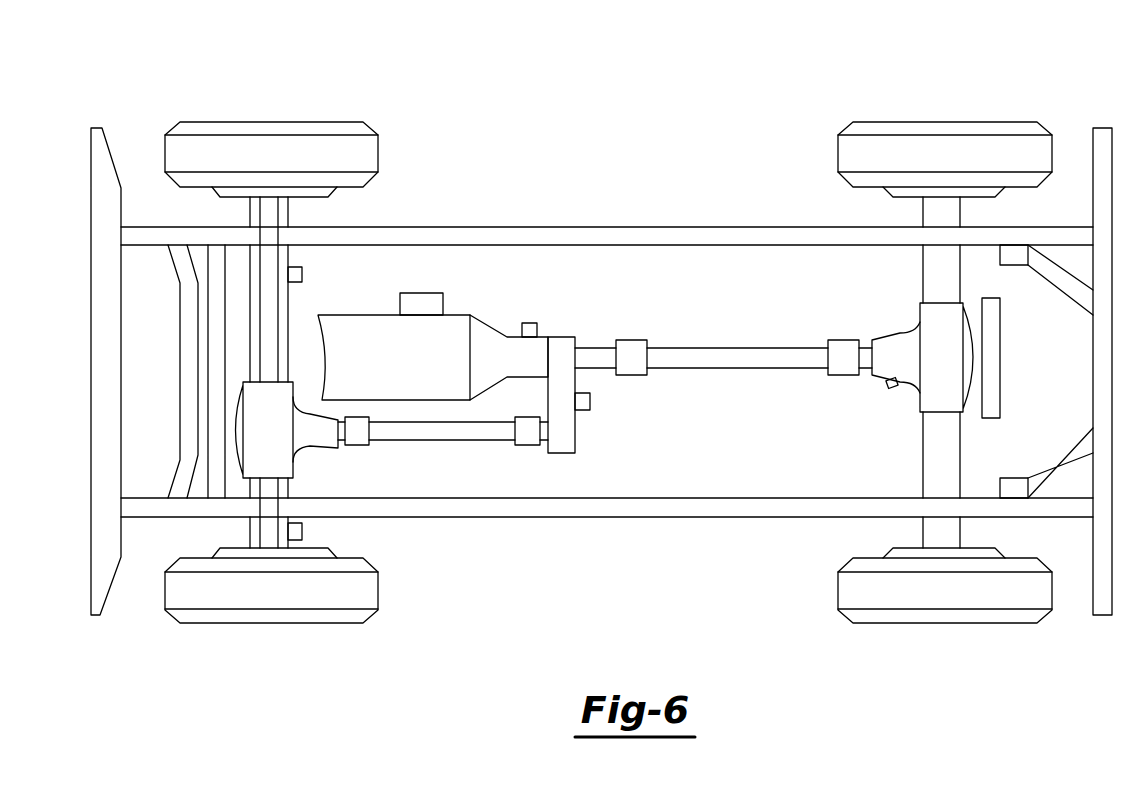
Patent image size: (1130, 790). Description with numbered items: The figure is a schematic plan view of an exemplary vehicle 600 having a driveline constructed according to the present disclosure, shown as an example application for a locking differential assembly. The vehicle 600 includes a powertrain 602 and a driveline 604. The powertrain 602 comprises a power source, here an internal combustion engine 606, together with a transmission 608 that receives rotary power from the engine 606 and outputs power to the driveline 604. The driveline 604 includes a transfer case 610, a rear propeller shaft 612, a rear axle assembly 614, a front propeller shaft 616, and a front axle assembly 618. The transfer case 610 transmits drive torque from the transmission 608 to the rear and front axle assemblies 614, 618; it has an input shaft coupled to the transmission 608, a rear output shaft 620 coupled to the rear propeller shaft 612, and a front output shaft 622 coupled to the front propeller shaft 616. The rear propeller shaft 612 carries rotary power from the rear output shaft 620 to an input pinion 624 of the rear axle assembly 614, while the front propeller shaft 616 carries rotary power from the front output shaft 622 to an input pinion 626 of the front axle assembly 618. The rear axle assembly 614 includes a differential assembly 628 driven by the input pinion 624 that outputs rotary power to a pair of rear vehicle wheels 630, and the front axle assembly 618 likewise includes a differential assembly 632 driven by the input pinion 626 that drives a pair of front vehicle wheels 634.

The vehicle 600 is at (714, 71).
The powertrain 602 is at (433, 298).
The driveline 604 is at (737, 342).
The internal combustion engine 606 is at (358, 315).
The transmission 608 is at (492, 325).
The transfer case 610 is at (563, 340).
The rear propeller shaft 612 is at (752, 368).
The rear axle assembly 614 is at (929, 372).
The front propeller shaft 616 is at (447, 440).
The front axle assembly 618 is at (266, 372).
The rear output shaft 620 is at (603, 363).
The front output shaft 622 is at (547, 445).
The input pinion 624 is at (865, 375).
The input pinion 626 is at (340, 437).
The differential assembly 628 is at (943, 363).
The rear vehicle wheels 630 is at (882, 122).
The differential assembly 632 is at (258, 437).
The front vehicle wheels 634 is at (338, 122).